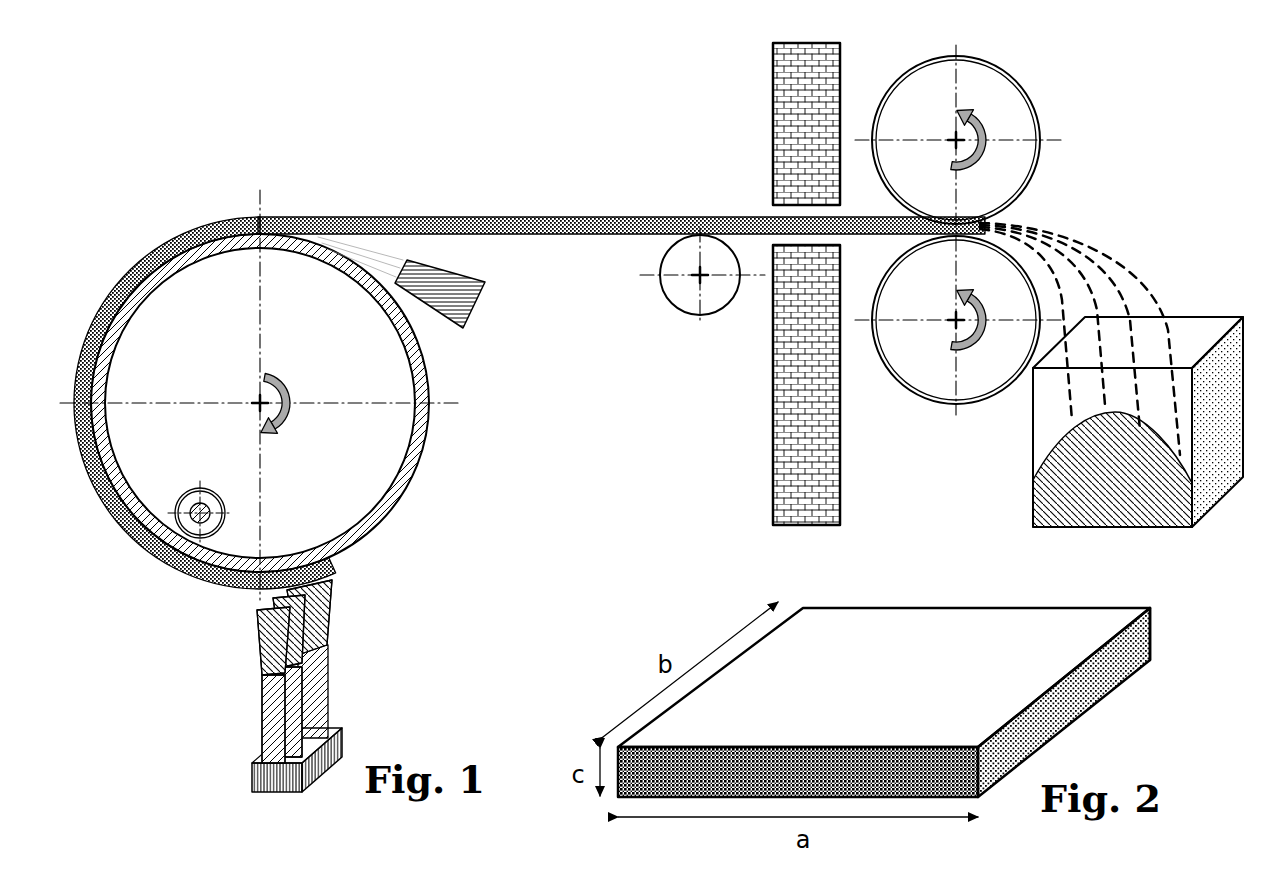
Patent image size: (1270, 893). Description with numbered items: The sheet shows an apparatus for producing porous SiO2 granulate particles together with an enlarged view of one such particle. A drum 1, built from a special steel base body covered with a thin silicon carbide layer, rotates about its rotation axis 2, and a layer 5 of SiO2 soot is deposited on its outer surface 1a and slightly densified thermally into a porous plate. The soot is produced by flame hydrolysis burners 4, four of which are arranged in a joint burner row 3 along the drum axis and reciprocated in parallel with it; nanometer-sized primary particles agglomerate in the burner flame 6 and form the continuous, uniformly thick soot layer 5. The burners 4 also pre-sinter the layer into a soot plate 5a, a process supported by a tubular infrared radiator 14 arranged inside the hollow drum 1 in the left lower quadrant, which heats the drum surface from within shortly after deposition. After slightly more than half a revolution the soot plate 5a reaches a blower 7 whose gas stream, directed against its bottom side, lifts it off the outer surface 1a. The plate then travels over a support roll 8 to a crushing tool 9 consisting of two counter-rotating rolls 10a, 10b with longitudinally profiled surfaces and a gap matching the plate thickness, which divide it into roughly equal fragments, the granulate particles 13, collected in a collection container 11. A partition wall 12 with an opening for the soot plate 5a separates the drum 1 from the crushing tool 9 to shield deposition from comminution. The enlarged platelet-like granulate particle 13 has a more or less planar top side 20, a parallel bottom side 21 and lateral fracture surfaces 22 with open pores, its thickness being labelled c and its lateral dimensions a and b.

In FIG. 1, the drum 1 is at (428, 417).
In FIG. 1, the outer surface 1a is at (418, 475).
In FIG. 1, the rotation axis 2 is at (268, 412).
In FIG. 1, the burner row 3 is at (247, 771).
In FIG. 1, the flame hydrolysis burners 4 is at (292, 671).
In FIG. 1, the SiO2 soot layer 5 is at (243, 587).
In FIG. 1, the soot plate 5a is at (578, 222).
In FIG. 1, the burner flame 6 is at (323, 615).
In FIG. 1, the blower 7 is at (453, 302).
In FIG. 1, the support roll 8 is at (697, 282).
In FIG. 1, the crushing tool 9 is at (1001, 283).
In FIG. 1, the roll 10a is at (992, 138).
In FIG. 1, the roll 10b is at (963, 365).
In FIG. 1, the collection container 11 is at (1190, 332).
In FIG. 1, the partition wall 12 is at (787, 385).
In FIG. 1, the granulate particles 13 is at (1144, 251).
In FIG. 2, the granulate particles 13 is at (879, 673).
In FIG. 1, the tubular infrared radiator 14 is at (187, 533).
In FIG. 2, the top side 20 is at (1068, 636).
In FIG. 2, the bottom side 21 is at (1105, 702).
In FIG. 2, the lateral fracture surfaces 22 is at (1150, 662).